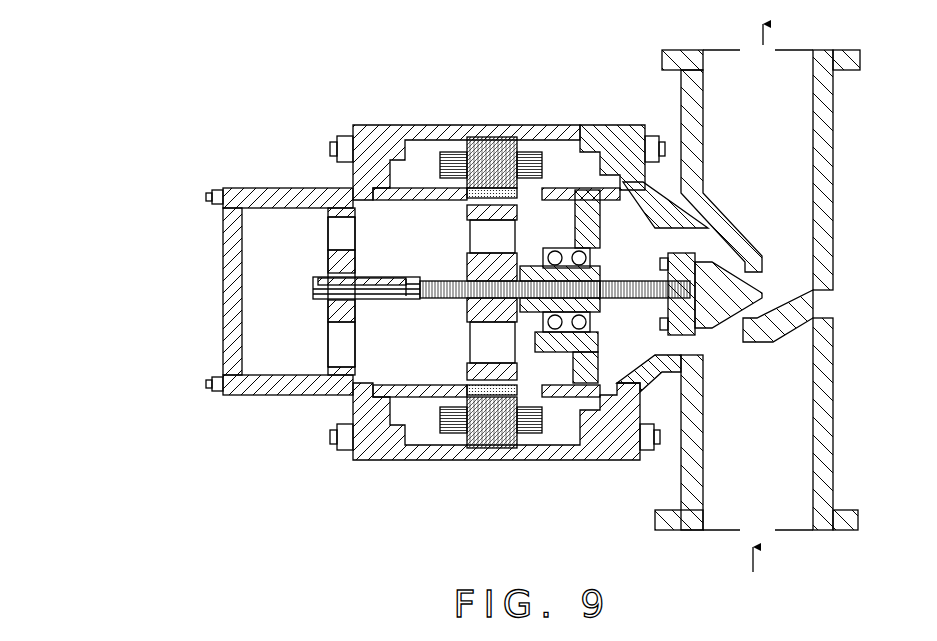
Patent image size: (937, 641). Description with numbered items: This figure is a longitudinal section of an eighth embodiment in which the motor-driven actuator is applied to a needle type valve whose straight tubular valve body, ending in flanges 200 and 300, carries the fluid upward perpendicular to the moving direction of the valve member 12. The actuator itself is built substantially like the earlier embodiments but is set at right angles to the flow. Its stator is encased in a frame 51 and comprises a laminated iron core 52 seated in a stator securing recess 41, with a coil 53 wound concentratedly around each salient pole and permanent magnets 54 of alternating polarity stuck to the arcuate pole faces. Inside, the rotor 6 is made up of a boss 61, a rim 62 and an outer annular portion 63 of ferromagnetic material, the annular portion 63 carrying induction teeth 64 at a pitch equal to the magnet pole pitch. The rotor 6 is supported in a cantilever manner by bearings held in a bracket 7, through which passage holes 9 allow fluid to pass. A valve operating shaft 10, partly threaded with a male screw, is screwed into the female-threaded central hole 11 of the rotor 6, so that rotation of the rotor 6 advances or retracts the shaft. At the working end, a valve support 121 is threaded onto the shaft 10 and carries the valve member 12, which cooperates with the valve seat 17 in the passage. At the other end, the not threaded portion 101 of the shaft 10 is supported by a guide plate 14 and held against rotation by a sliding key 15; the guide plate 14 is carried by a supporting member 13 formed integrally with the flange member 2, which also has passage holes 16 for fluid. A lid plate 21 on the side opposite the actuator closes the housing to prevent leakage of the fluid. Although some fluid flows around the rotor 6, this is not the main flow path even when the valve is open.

The flange member 2 is at (280, 188).
The lid plate 21 is at (238, 188).
The passage holes 16 is at (330, 240).
The sliding key 15 is at (322, 288).
The guide plate 14 is at (330, 316).
The supporting member 13 is at (330, 337).
The not threaded portion 101 is at (405, 300).
The valve operating shaft 10 is at (434, 280).
The central hole 11 is at (617, 282).
The frame 51 is at (578, 127).
The bracket 7 is at (600, 127).
The stator securing recess 41 is at (550, 127).
The coil 53 is at (450, 127).
The laminated iron core 52 is at (492, 128).
The permanent magnets 54 is at (517, 196).
The rotor 6 is at (538, 449).
The induction teeth 64 is at (433, 449).
The outer annular portion 63 is at (467, 366).
The boss 61 is at (466, 333).
The rim 62 is at (517, 340).
The passage holes 9 is at (600, 221).
The valve support 121 is at (700, 332).
The valve member 12 is at (758, 296).
The valve seat 17 is at (748, 250).
The flange 300 is at (848, 68).
The flange 200 is at (840, 512).